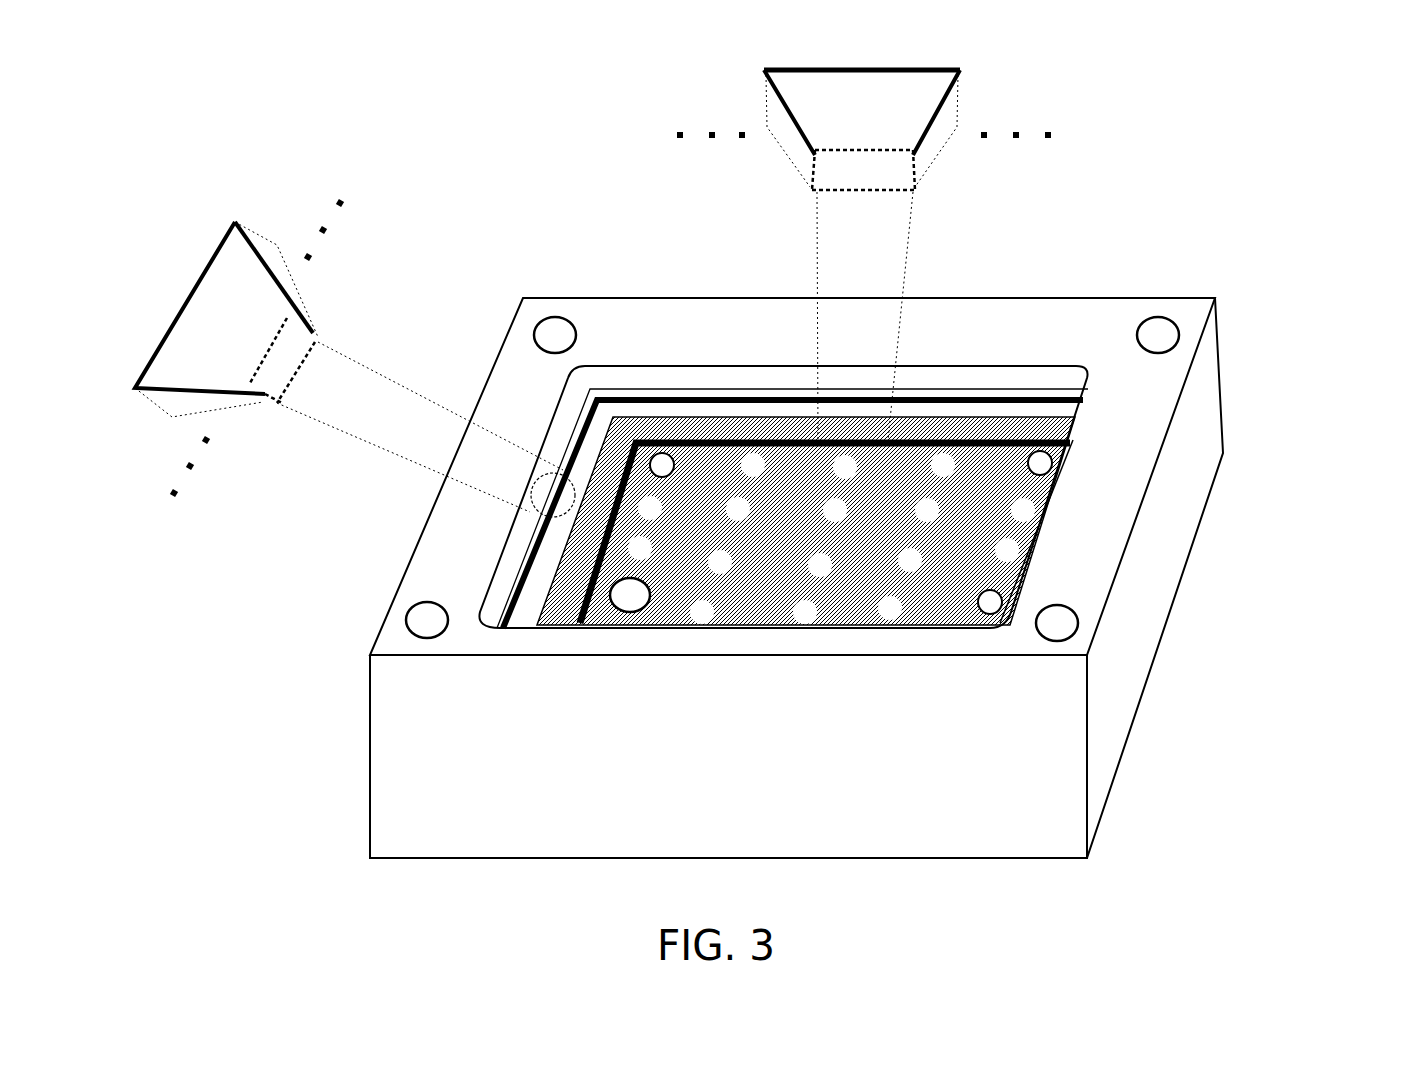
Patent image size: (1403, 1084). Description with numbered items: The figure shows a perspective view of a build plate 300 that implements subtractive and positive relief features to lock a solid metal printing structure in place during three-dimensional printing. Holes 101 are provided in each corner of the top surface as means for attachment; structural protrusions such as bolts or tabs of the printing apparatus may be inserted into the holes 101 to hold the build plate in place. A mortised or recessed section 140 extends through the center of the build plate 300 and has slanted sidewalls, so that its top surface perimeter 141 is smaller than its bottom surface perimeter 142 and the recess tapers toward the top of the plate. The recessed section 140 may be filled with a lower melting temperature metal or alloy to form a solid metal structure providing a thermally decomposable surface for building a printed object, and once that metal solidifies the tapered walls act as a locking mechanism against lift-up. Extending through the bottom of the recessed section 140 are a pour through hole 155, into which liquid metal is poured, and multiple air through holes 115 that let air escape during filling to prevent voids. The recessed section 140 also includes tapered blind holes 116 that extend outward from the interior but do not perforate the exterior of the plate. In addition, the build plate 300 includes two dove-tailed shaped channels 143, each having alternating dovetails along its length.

The build plate 300 is at (384, 118).
The holes 101 is at (1184, 334).
The air through holes 115 is at (1054, 463).
The blind holes 116 is at (950, 518).
The recessed section 140 is at (984, 574).
The top surface perimeter 141 is at (713, 389).
The bottom surface perimeter 142 is at (964, 429).
The dove-tailed shaped channels 143 is at (170, 300).
The pour through hole 155 is at (598, 614).